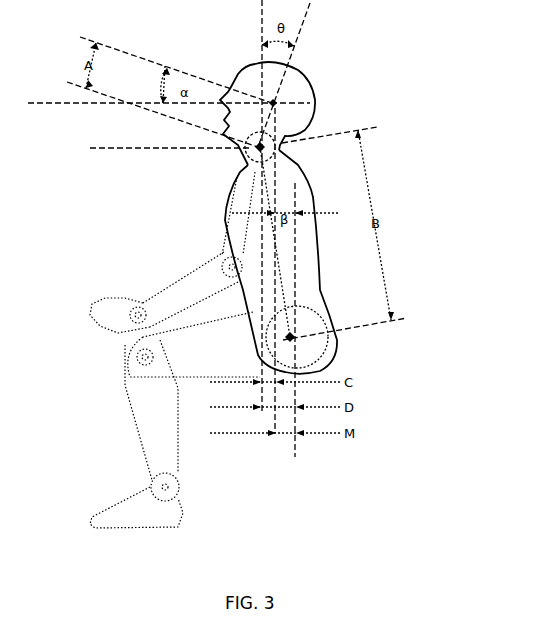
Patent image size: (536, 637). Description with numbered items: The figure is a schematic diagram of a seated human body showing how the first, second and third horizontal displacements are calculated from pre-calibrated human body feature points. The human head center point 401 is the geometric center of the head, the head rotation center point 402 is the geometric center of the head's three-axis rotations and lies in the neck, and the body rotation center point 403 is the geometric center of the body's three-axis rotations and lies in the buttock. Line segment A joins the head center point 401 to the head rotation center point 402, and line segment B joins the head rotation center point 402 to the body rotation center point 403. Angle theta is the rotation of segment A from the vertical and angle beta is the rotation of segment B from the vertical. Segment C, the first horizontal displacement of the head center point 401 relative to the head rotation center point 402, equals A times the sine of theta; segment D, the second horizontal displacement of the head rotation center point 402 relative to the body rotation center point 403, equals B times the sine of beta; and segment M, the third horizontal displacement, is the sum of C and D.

The human head center point 401 is at (276, 101).
The head rotation center point 402 is at (246, 155).
The body rotation center point 403 is at (316, 346).